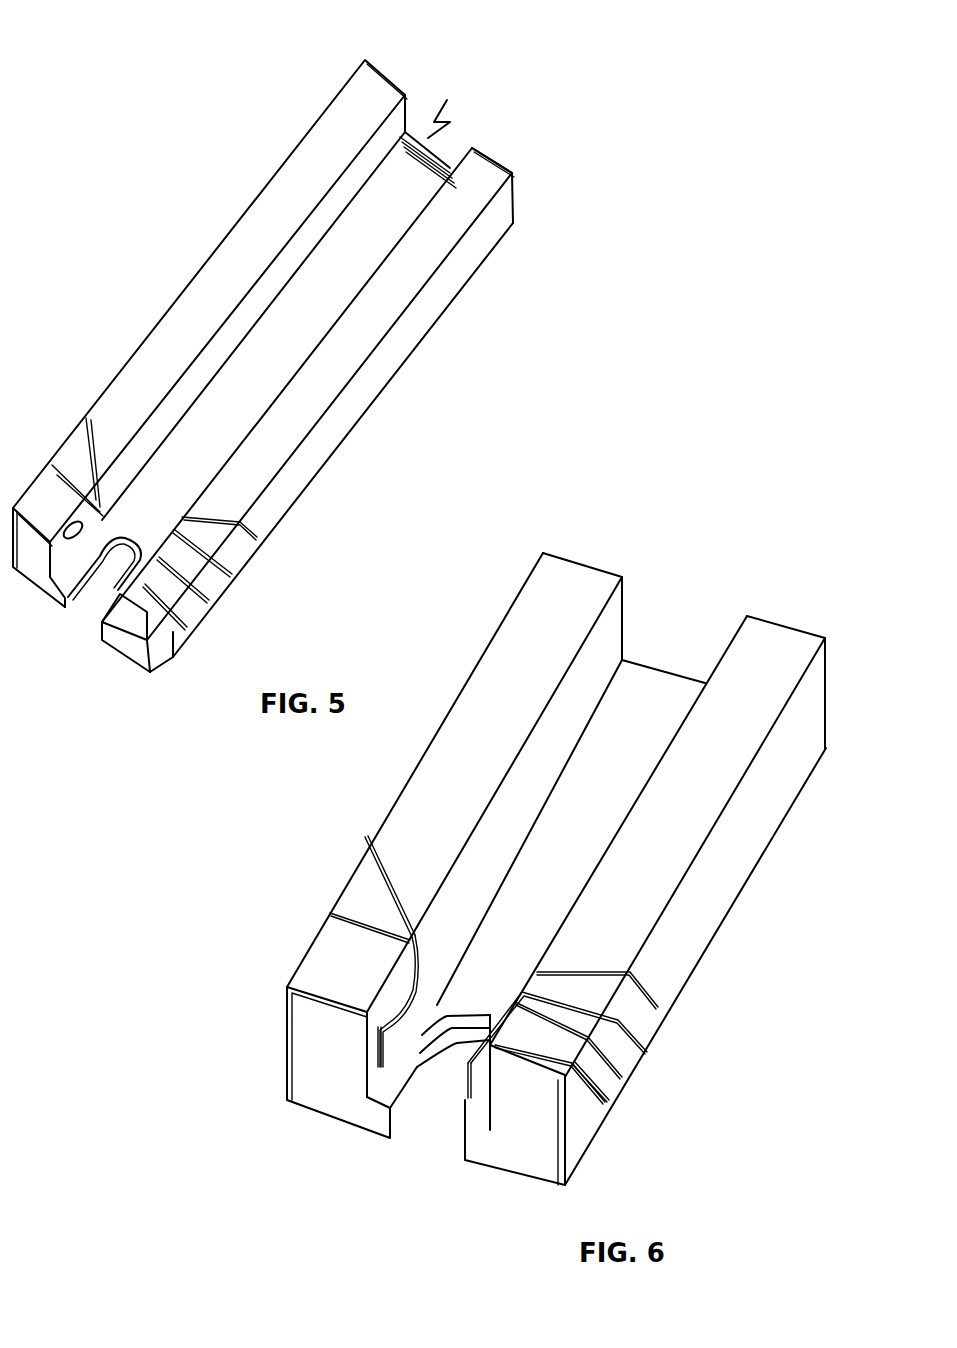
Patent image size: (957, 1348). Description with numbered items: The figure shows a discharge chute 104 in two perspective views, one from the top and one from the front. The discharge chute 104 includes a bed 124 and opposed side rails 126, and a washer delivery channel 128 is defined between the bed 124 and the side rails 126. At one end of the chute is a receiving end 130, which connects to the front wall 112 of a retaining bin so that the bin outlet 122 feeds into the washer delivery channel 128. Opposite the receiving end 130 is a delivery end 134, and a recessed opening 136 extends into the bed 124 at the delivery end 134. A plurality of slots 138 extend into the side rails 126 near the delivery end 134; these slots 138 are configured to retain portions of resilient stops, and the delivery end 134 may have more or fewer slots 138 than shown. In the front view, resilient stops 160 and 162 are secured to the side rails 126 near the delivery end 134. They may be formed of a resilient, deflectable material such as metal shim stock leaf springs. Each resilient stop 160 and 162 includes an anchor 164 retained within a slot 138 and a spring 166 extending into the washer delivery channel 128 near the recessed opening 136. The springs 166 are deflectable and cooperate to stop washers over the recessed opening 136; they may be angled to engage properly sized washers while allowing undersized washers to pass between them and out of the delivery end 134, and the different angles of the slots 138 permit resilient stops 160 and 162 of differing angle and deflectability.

In FIG. 5, the discharge chute 104 is at (293, 360).
In FIG. 6, the discharge chute 104 is at (585, 895).
In FIG. 5, the front wall 112 is at (457, 142).
In FIG. 5, the bin outlet 122 is at (423, 145).
In FIG. 5, the bed 124 is at (375, 232).
In FIG. 5, the side rails 126 is at (243, 233).
In FIG. 6, the side rails 126 is at (481, 678).
In FIG. 5, the washer delivery channel 128 is at (385, 197).
In FIG. 6, the washer delivery channel 128 is at (666, 665).
In FIG. 5, the receiving end 130 is at (505, 195).
In FIG. 5, the delivery end 134 is at (133, 650).
In FIG. 6, the delivery end 134 is at (540, 1152).
In FIG. 5, the recessed opening 136 is at (97, 605).
In FIG. 6, the recessed opening 136 is at (433, 1127).
In FIG. 5, the slots 138 is at (238, 577).
In FIG. 6, the slots 138 is at (363, 853).
In FIG. 6, the resilient stop 160 is at (615, 1010).
In FIG. 6, the resilient stop 162 is at (365, 840).
In FIG. 6, the anchor 164 is at (365, 838).
In FIG. 6, the spring 166 is at (390, 1042).